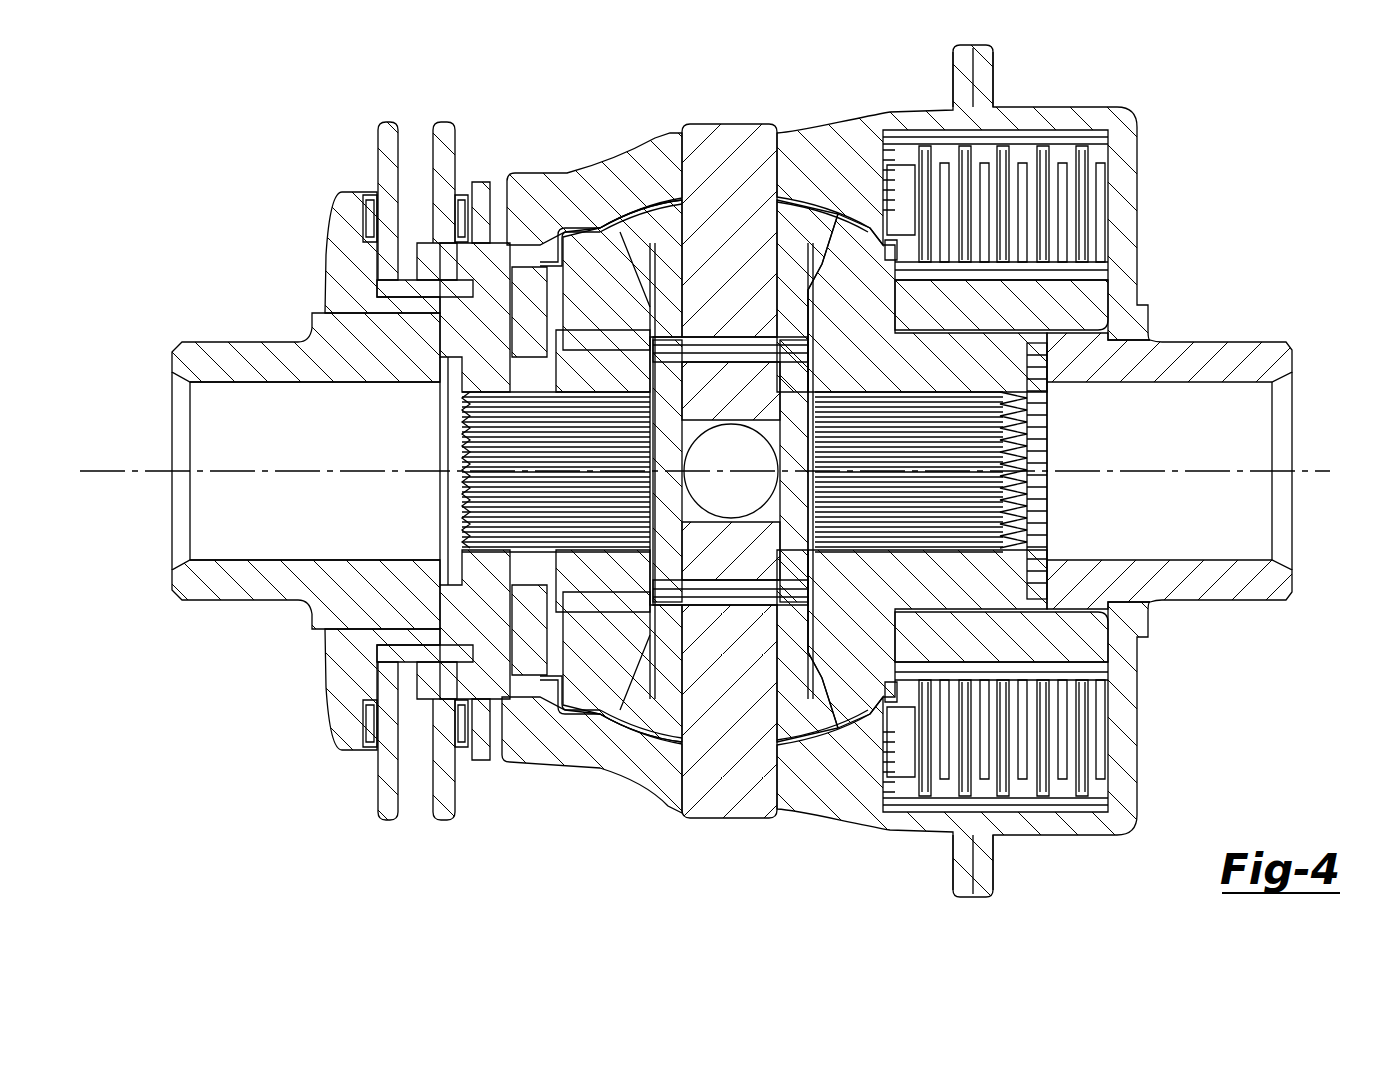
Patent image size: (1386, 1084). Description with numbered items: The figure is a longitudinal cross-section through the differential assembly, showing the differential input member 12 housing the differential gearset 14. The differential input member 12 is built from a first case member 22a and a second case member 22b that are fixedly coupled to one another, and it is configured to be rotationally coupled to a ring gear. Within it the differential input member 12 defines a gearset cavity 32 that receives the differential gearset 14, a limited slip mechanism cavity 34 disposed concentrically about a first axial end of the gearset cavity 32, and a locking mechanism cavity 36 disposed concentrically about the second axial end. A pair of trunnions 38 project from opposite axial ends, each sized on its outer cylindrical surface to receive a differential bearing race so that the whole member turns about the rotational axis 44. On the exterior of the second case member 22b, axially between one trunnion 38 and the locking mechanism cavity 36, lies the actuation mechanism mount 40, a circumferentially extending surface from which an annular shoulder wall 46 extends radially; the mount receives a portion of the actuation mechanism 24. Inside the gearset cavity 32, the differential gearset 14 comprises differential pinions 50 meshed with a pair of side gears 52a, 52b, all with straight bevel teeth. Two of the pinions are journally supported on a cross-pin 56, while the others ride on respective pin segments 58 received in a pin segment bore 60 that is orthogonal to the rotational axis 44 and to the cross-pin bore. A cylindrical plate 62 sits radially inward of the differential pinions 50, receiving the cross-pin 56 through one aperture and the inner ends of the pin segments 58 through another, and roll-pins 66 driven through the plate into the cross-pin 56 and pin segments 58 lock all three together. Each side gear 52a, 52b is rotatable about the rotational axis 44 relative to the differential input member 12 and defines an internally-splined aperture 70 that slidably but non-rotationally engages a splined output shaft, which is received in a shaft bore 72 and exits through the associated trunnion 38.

The differential input member 12 is at (858, 852).
The differential gearset 14 is at (612, 669).
The first case member 22a is at (956, 868).
The second case member 22b is at (970, 902).
The actuation mechanism 24 is at (352, 158).
The gearset cavity 32 is at (572, 722).
The limited slip mechanism cavity 34 is at (1095, 797).
The locking mechanism cavity 36 is at (508, 600).
The trunnions 38 is at (218, 360).
The actuation mechanism mount 40 is at (354, 594).
The rotational axis 44 is at (122, 467).
The annular shoulder wall 46 is at (493, 272).
The differential pinions 50 is at (655, 215).
The side gear 52a is at (870, 350).
The side gear 52b is at (612, 686).
The cross-pin 56 is at (745, 482).
The pin segments 58 is at (708, 140).
The pin segment bore 60 is at (780, 794).
The cylindrical plate 62 is at (660, 385).
The roll-pins 66 is at (795, 350).
The internally-splined aperture 70 is at (490, 442).
The shaft bore 72 is at (220, 528).